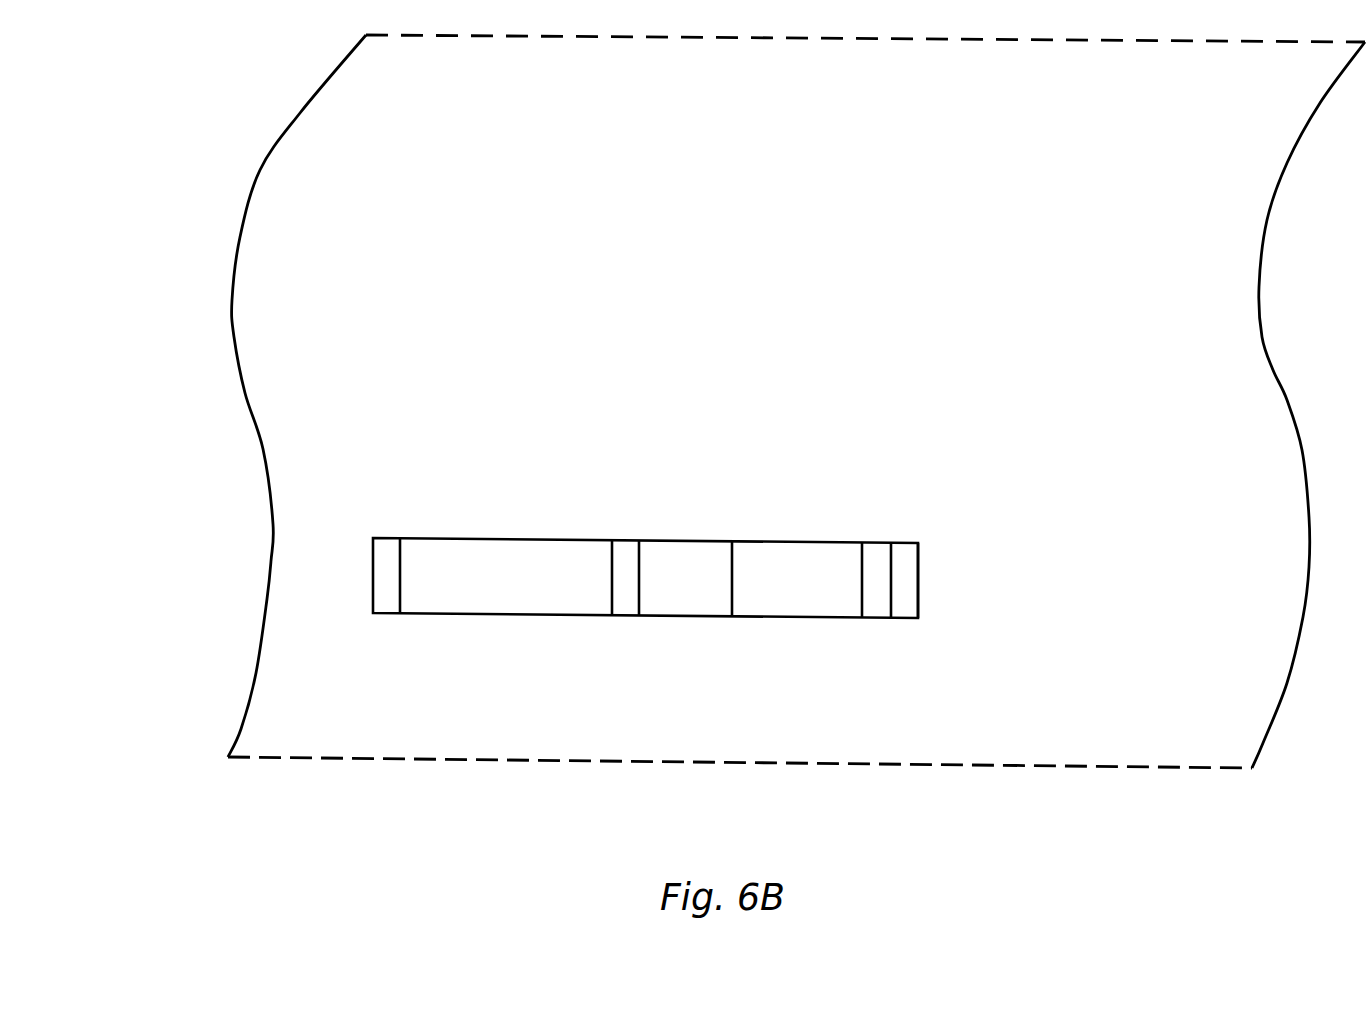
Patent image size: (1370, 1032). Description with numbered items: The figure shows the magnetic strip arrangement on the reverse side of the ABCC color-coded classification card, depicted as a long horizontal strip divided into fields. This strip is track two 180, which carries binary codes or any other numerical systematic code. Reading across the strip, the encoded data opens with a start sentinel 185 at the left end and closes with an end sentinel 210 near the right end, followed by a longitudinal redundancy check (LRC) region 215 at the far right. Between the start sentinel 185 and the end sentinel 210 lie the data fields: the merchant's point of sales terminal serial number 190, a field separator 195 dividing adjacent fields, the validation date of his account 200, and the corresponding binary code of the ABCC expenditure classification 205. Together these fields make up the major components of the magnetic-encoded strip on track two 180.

The track two 180 is at (751, 401).
The start sentinel 185 is at (383, 616).
The merchant's point of sales terminal serial number 190 is at (495, 616).
The field separator 195 is at (622, 617).
The validation date of his account 200 is at (682, 619).
The binary code of the ABCC expenditure classification 205 is at (780, 619).
The end sentinel 210 is at (878, 585).
The longitudinal redundancy check (LRC) region 215 is at (927, 596).